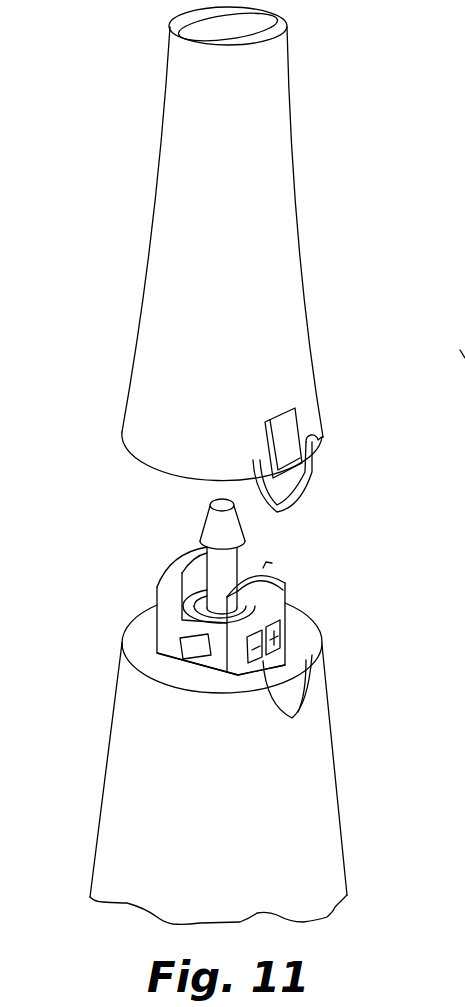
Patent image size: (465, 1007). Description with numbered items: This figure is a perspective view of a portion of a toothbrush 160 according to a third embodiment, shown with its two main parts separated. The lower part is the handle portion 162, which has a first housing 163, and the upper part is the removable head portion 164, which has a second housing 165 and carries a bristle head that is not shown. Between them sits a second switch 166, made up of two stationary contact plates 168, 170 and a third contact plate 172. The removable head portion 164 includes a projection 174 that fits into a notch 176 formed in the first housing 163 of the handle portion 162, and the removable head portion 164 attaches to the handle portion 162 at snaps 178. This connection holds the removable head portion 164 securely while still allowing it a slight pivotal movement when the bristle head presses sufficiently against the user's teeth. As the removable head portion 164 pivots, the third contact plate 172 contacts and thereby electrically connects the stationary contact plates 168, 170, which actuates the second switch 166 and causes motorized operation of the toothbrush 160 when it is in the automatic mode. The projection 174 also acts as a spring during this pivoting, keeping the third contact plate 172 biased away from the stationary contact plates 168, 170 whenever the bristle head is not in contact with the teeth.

The toothbrush 160 is at (98, 455).
The handle portion 162 is at (345, 767).
The first housing 163 is at (310, 855).
The removable head portion 164 is at (335, 336).
The second housing 165 is at (275, 236).
The second switch 166 is at (357, 580).
The stationary contact plate 168 is at (265, 687).
The stationary contact plate 170 is at (250, 670).
The third contact plate 172 is at (297, 457).
The projection 174 is at (305, 490).
The notch 176 is at (287, 688).
The snaps 178 is at (182, 640).